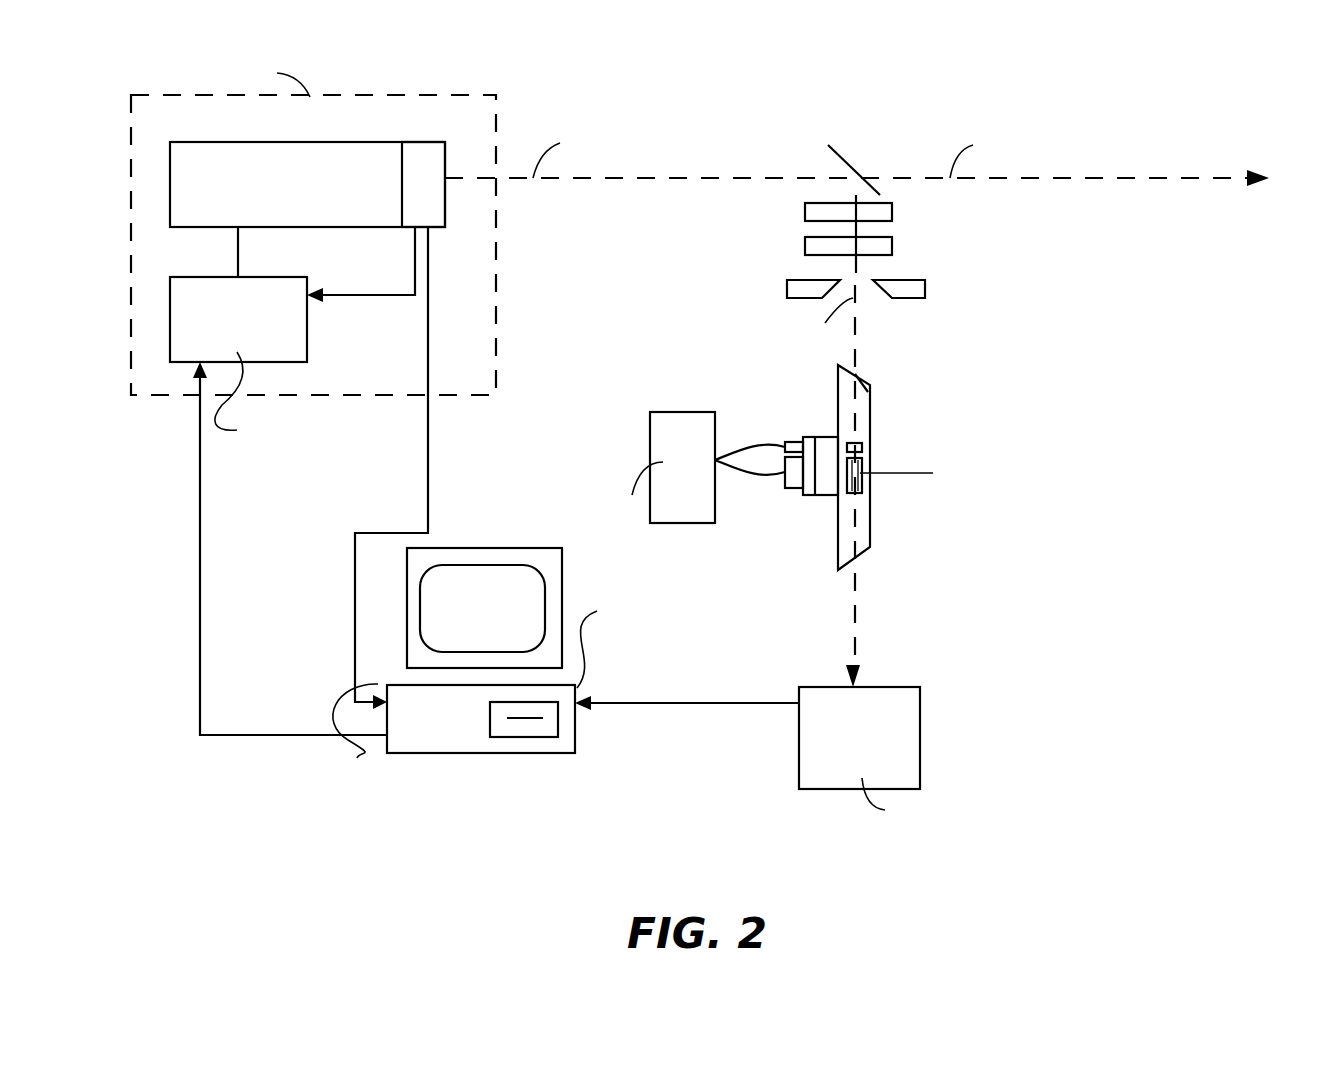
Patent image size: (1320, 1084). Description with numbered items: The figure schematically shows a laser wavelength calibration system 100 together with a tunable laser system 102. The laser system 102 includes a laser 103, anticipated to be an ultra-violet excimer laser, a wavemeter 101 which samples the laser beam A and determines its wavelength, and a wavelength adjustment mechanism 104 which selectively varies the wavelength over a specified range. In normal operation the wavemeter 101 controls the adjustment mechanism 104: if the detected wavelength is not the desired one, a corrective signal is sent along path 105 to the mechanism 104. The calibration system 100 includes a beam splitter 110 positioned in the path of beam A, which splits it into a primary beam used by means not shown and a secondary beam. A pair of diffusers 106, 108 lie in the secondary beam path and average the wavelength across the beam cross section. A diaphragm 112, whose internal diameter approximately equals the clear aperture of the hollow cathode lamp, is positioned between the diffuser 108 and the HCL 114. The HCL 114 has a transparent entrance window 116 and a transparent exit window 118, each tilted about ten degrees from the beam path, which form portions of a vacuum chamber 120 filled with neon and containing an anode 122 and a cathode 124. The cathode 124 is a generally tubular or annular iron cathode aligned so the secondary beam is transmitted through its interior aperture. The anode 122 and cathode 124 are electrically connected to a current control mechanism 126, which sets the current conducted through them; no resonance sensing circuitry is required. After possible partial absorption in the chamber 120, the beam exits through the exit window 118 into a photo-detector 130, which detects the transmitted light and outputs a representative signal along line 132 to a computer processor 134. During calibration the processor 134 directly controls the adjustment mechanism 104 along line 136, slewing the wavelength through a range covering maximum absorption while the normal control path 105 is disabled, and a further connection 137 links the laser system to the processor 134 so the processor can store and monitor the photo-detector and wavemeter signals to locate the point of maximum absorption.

The calibration system 100 is at (205, 813).
The wavemeter 101 is at (414, 148).
The tunable laser system 102 is at (432, 100).
The laser 103 is at (182, 148).
The wavelength adjustment mechanism 104 is at (308, 307).
The path 105 is at (415, 282).
The diffuser 106 is at (890, 215).
The diffuser 108 is at (890, 250).
The beam splitter 110 is at (830, 145).
The diaphragm 112 is at (917, 290).
The HCL 114 is at (919, 469).
The transparent entrance window 116 is at (858, 392).
The transparent exit window 118 is at (858, 542).
The vacuum chamber 120 is at (872, 502).
The anode 122 is at (848, 438).
The cathode 124 is at (843, 483).
The current control mechanism 126 is at (677, 425).
The photo-detector 130 is at (905, 703).
The line 132 is at (665, 703).
The computer processor 134 is at (445, 742).
The line 136 is at (200, 543).
The signal line 137 is at (355, 543).